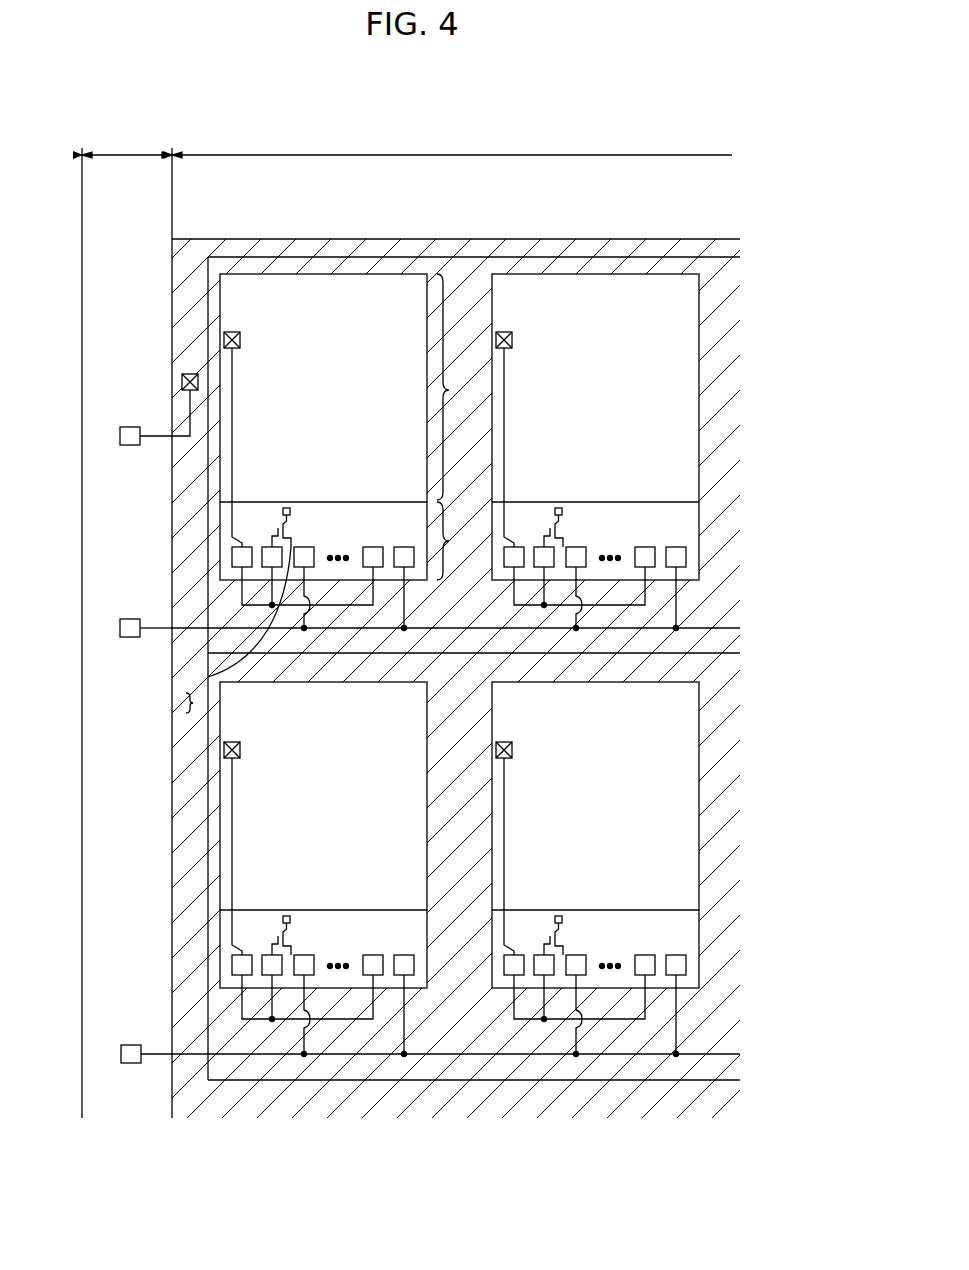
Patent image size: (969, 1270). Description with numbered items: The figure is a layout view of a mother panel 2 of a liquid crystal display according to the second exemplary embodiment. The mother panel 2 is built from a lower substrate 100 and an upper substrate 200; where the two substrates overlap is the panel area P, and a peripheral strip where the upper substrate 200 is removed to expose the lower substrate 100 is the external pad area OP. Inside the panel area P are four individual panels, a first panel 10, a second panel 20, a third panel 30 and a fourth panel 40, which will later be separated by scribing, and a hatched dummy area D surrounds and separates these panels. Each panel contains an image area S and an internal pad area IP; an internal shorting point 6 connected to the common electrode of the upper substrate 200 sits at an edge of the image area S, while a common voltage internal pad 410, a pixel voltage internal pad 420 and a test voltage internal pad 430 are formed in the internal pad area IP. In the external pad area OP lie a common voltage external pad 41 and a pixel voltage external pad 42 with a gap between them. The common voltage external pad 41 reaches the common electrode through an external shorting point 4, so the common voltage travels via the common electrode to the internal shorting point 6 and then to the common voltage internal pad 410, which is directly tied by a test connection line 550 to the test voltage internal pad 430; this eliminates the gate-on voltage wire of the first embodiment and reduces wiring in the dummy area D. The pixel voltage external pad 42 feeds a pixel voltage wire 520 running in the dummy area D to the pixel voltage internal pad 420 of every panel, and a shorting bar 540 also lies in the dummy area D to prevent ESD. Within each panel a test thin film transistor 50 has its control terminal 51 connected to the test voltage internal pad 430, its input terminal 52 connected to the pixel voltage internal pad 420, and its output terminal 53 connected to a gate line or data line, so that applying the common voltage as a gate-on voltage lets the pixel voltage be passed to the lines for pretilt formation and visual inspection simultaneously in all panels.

The mother panel 2 is at (297, 99).
The lower substrate 100 is at (125, 252).
The upper substrate 200 is at (241, 256).
The first panel 10 is at (268, 438).
The second panel 20 is at (569, 273).
The third panel 30 is at (219, 852).
The fourth panel 40 is at (701, 788).
The external shorting point 4 is at (181, 382).
The internal shorting point 6 is at (246, 341).
The common voltage external pad 41 is at (119, 436).
The pixel voltage external pad 42 is at (119, 628).
The test thin film transistor 50 is at (288, 480).
The control terminal 51 is at (278, 524).
The input terminal 52 is at (208, 672).
The output terminal 53 is at (296, 529).
The common voltage internal pad 410 is at (231, 557).
The pixel voltage internal pad 420 is at (306, 545).
The test voltage internal pad 430 is at (268, 536).
The pixel voltage wire 520 is at (462, 626).
The shorting bar 540 is at (455, 656).
The test connection line 550 is at (242, 606).
The image area S is at (450, 387).
The internal pad area IP is at (453, 541).
The external pad area OP is at (127, 142).
The panel area P is at (452, 142).
The dummy area D is at (184, 703).